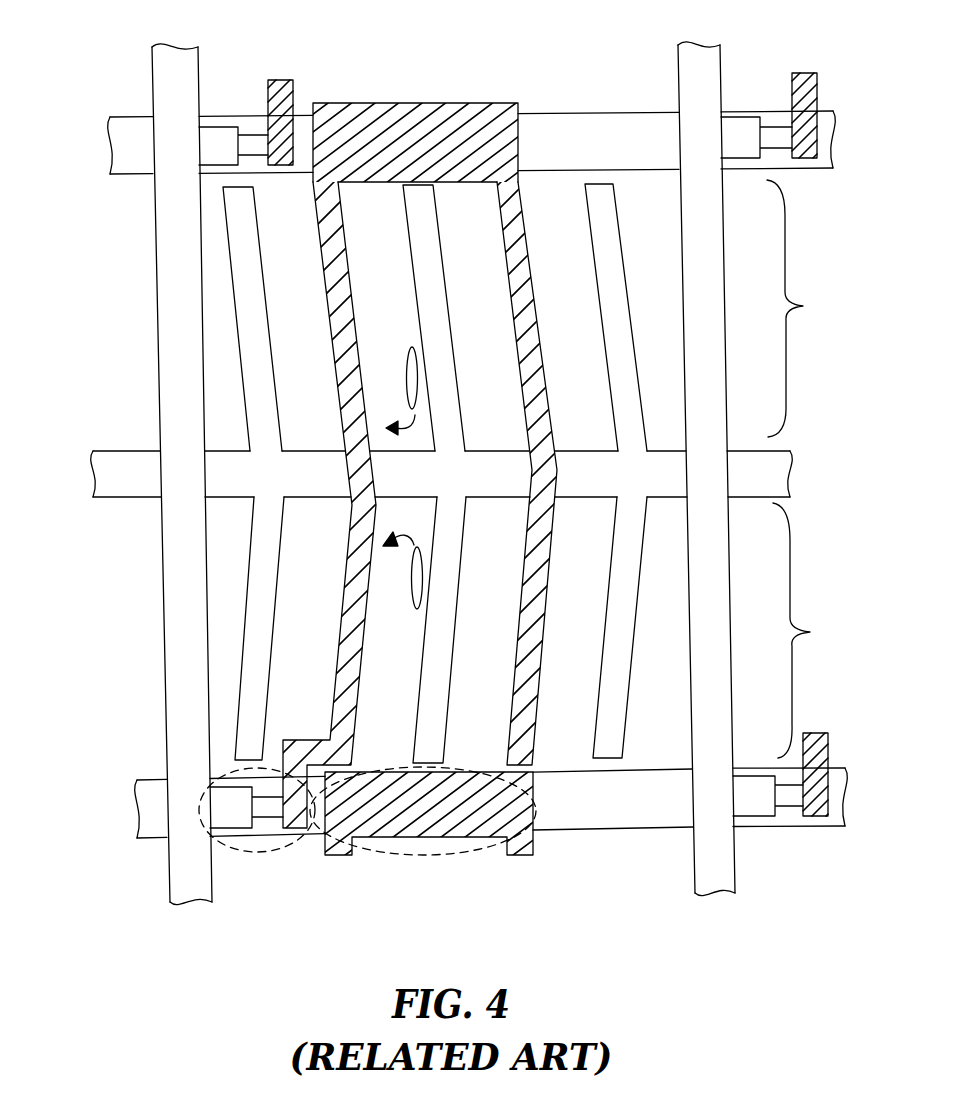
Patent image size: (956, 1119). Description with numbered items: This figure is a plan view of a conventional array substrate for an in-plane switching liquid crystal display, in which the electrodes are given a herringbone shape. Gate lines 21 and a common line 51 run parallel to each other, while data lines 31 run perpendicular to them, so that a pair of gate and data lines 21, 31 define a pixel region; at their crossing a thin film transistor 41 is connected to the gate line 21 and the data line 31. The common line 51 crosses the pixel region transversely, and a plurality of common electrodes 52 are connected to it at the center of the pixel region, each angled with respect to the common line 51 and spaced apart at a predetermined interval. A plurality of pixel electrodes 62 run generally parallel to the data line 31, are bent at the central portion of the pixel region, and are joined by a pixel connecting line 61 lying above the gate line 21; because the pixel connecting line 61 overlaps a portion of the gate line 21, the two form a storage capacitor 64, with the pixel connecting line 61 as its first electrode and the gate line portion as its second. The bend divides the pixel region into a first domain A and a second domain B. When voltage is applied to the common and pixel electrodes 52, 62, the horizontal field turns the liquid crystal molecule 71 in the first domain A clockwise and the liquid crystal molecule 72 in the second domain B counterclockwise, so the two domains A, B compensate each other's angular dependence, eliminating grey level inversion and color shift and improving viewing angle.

The gate line 21 is at (600, 808).
The data line 31 is at (197, 652).
The thin film transistor 41 is at (257, 855).
The common line 51 is at (590, 493).
The common electrode 52 is at (243, 248).
The pixel connecting line 61 is at (343, 118).
The pixel electrode 62 is at (345, 325).
The storage capacitor 64 is at (375, 855).
The liquid crystal molecule 71 is at (407, 373).
The liquid crystal molecule 72 is at (411, 578).
The first domain A is at (797, 308).
The second domain B is at (803, 630).